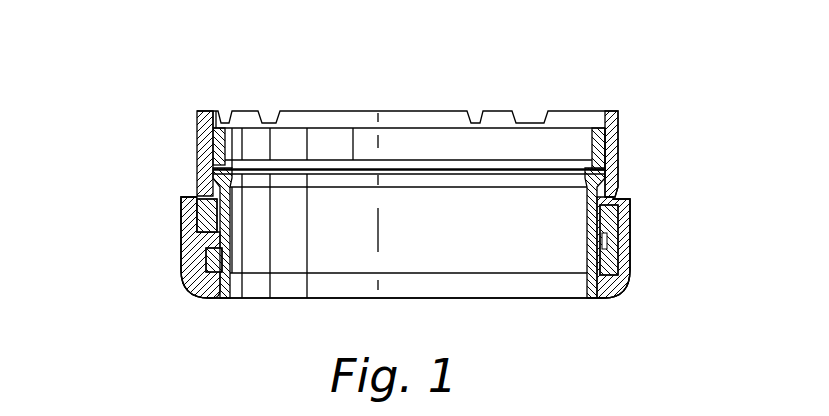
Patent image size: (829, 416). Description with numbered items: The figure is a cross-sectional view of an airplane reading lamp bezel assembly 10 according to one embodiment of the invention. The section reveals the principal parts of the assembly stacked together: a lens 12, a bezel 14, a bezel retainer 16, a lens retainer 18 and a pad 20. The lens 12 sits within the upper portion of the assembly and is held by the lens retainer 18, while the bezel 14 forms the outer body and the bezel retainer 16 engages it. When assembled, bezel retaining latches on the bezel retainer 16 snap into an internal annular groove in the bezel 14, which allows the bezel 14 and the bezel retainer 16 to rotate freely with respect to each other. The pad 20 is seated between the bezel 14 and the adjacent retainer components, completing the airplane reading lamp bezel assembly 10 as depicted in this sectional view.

The airplane reading lamp bezel assembly 10 is at (337, 92).
The lens 12 is at (577, 181).
The bezel 14 is at (632, 266).
The bezel retainer 16 is at (620, 155).
The lens retainer 18 is at (527, 152).
The pad 20 is at (197, 211).